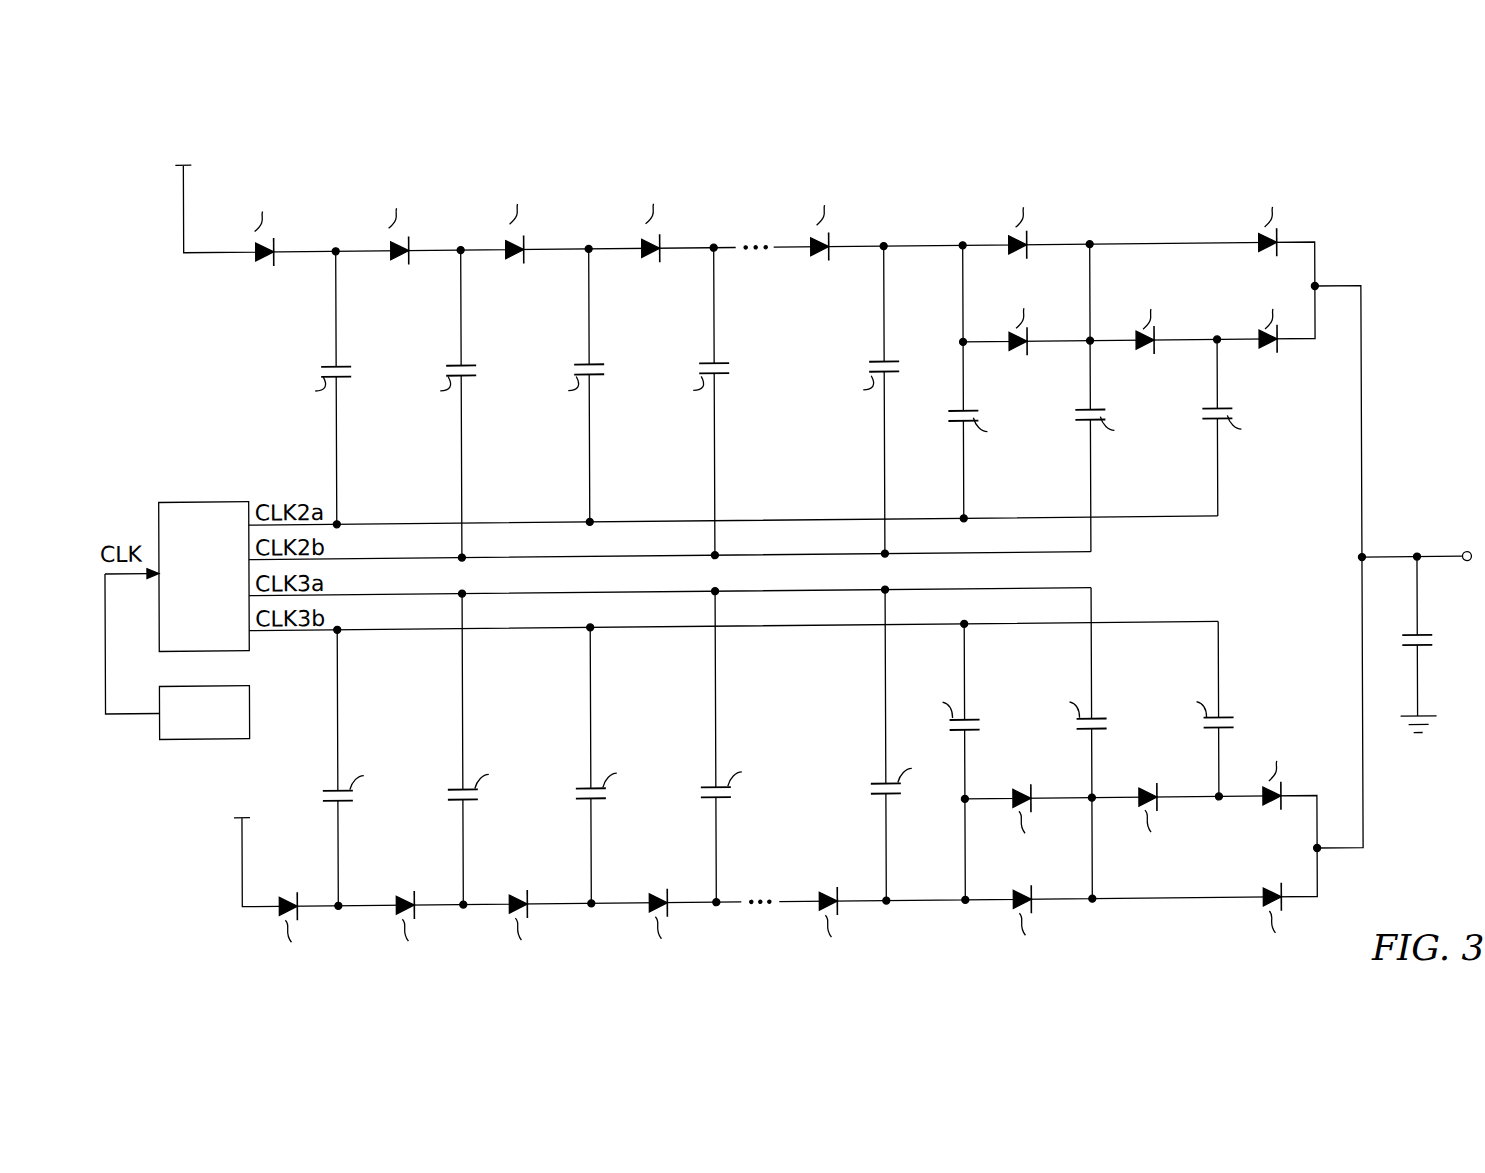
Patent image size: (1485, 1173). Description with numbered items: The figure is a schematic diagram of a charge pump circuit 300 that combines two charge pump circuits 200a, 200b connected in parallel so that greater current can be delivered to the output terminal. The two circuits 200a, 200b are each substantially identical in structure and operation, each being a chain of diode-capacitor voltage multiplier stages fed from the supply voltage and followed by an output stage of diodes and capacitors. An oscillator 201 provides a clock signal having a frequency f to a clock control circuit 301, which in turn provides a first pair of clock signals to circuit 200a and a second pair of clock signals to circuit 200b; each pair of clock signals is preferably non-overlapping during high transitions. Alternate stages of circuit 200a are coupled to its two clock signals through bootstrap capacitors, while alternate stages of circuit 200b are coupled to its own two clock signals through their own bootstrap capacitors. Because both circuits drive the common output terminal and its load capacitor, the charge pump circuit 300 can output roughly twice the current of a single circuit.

The charge pump circuit 300 is at (577, 168).
The clock control circuit 301 is at (228, 495).
The oscillator 201 is at (249, 717).
The charge pump circuit 200a is at (213, 372).
The charge pump circuit 200b is at (213, 804).